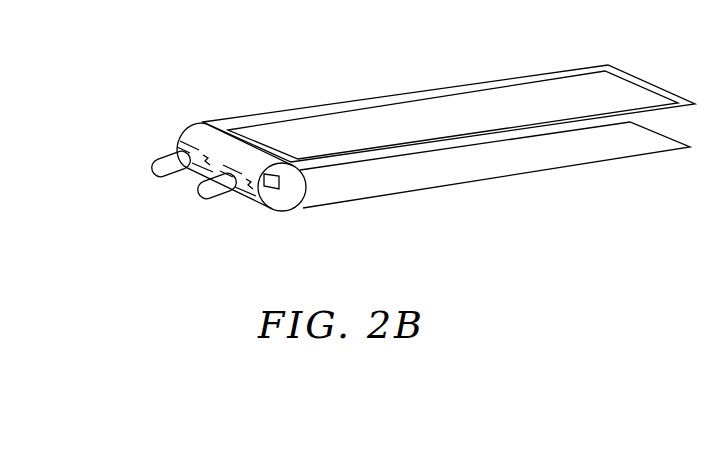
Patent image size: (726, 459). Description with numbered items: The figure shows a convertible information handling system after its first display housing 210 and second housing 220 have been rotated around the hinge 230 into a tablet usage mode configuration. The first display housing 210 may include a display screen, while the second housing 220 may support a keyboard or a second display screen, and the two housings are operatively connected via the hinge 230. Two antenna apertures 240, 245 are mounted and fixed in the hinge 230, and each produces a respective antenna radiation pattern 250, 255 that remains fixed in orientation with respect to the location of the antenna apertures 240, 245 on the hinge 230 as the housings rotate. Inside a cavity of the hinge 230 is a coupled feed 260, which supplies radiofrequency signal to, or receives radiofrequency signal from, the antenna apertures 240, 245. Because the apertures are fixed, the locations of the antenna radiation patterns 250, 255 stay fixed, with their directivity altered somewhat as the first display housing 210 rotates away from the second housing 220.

The first display housing 210 is at (516, 76).
The second housing 220 is at (500, 177).
The hinge 230 is at (199, 124).
The antenna aperture 240 is at (182, 146).
The antenna aperture 245 is at (248, 190).
The antenna radiation pattern 250 is at (153, 171).
The antenna radiation pattern 255 is at (203, 197).
The coupled feed 260 is at (279, 189).